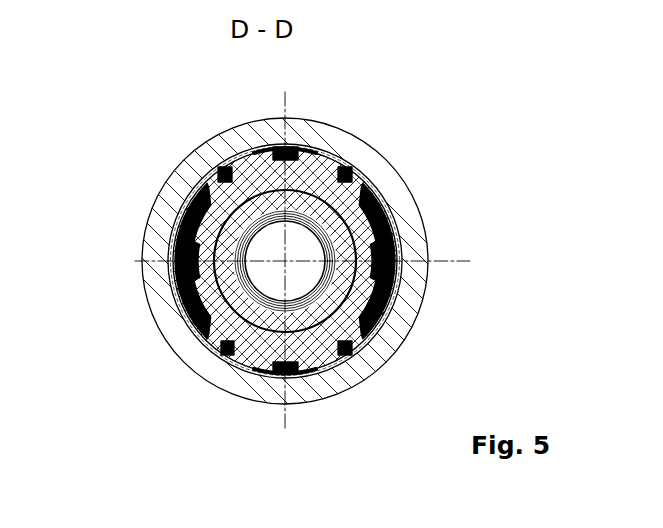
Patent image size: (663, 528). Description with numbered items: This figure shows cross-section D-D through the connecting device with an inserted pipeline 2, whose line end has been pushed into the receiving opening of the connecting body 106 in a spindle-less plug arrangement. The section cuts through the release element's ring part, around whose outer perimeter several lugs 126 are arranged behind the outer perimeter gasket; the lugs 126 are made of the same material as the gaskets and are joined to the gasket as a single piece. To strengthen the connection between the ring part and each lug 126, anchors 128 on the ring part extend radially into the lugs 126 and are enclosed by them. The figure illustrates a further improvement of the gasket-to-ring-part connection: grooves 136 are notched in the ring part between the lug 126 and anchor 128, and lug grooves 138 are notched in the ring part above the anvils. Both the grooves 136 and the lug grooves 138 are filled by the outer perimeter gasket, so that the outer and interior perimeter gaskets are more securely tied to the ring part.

The pipeline 2 is at (240, 220).
The connecting body 106 is at (395, 200).
The lug 126 is at (277, 146).
The anchor 128 is at (176, 251).
The groove 136 is at (232, 180).
The lug groove 138 is at (288, 160).